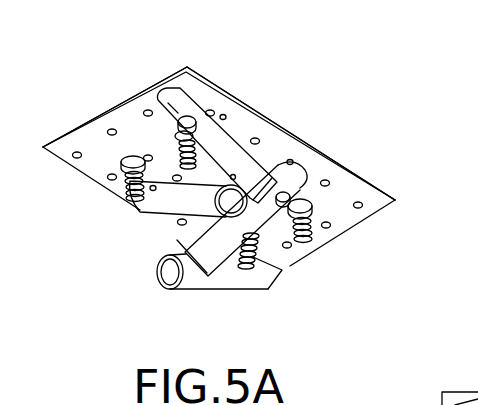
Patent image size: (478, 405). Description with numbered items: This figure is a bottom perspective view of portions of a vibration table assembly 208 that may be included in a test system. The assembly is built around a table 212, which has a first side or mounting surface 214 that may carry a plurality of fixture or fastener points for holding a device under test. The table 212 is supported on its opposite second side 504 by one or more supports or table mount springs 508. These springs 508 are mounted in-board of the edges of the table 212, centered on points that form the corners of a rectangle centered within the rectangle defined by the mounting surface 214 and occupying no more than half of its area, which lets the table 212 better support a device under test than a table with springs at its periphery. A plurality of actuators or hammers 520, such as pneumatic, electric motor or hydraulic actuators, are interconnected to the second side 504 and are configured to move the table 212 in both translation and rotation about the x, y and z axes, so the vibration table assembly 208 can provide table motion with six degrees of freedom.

The vibration table assembly 208 is at (270, 92).
The table 212 is at (80, 126).
The mounting surface 214 is at (321, 147).
The second side 504 is at (83, 170).
The table mount springs 508 is at (301, 240).
The actuators 520 is at (217, 290).